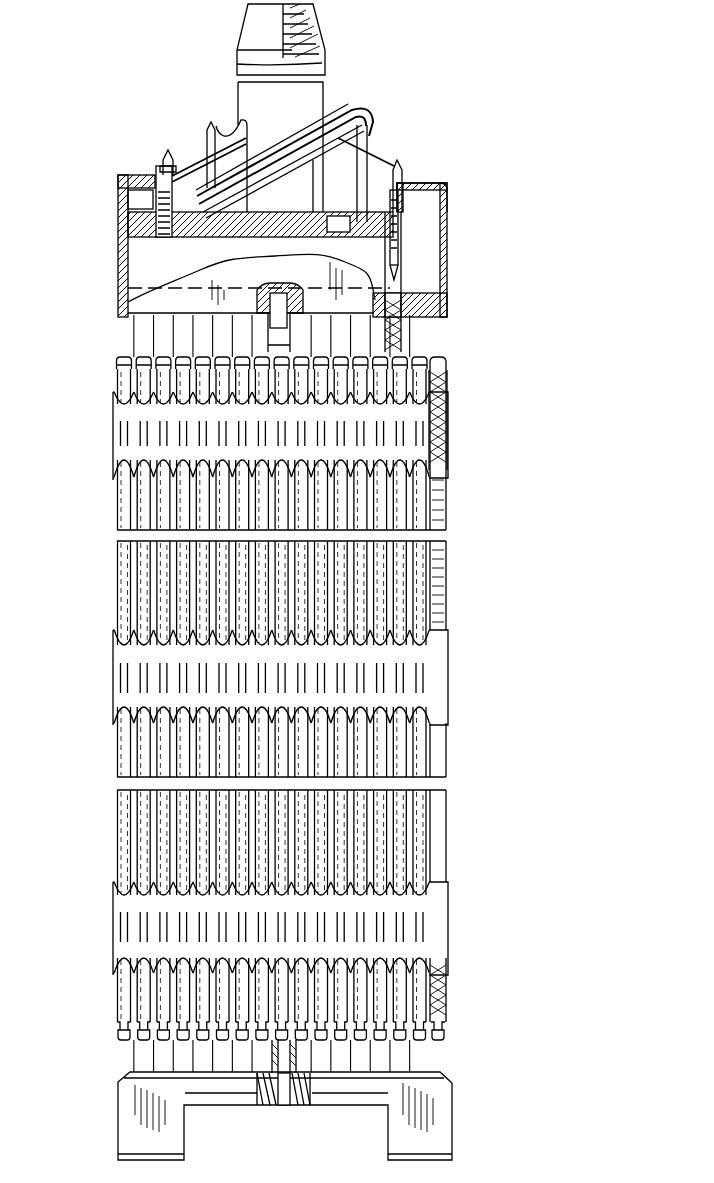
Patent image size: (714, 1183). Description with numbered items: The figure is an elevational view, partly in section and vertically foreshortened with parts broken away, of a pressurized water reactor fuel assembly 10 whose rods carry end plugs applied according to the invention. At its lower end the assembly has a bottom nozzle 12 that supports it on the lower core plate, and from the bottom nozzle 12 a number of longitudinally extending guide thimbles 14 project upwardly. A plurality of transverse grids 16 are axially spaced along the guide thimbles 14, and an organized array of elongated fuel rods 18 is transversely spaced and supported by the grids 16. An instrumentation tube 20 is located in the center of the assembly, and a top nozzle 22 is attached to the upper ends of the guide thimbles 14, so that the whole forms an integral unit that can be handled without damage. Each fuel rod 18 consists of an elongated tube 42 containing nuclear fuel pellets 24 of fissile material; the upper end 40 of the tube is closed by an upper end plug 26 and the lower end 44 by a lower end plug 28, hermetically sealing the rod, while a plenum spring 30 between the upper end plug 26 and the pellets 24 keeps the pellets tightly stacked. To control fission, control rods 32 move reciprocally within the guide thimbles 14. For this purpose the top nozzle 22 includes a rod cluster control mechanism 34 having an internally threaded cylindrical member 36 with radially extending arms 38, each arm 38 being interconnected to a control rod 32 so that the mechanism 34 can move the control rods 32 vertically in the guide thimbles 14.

The fuel assembly 10 is at (95, 360).
The bottom nozzle 12 is at (452, 1116).
The guide thimbles 14 is at (413, 336).
The transverse grids 16 is at (113, 431).
The fuel rods 18 is at (451, 441).
The instrumentation tube 20 is at (283, 1106).
The top nozzle 22 is at (449, 279).
The nuclear fuel pellets 24 is at (448, 520).
The upper end plug 26 is at (446, 364).
The lower end plug 28 is at (450, 1031).
The plenum spring 30 is at (448, 418).
The control rods 32 is at (399, 292).
The rod cluster control mechanism 34 is at (326, 100).
The internally threaded cylindrical member 36 is at (318, 34).
The arms 38 is at (212, 132).
The upper end 40 is at (447, 395).
The elongated tube 42 is at (448, 468).
The lower end 44 is at (450, 1021).